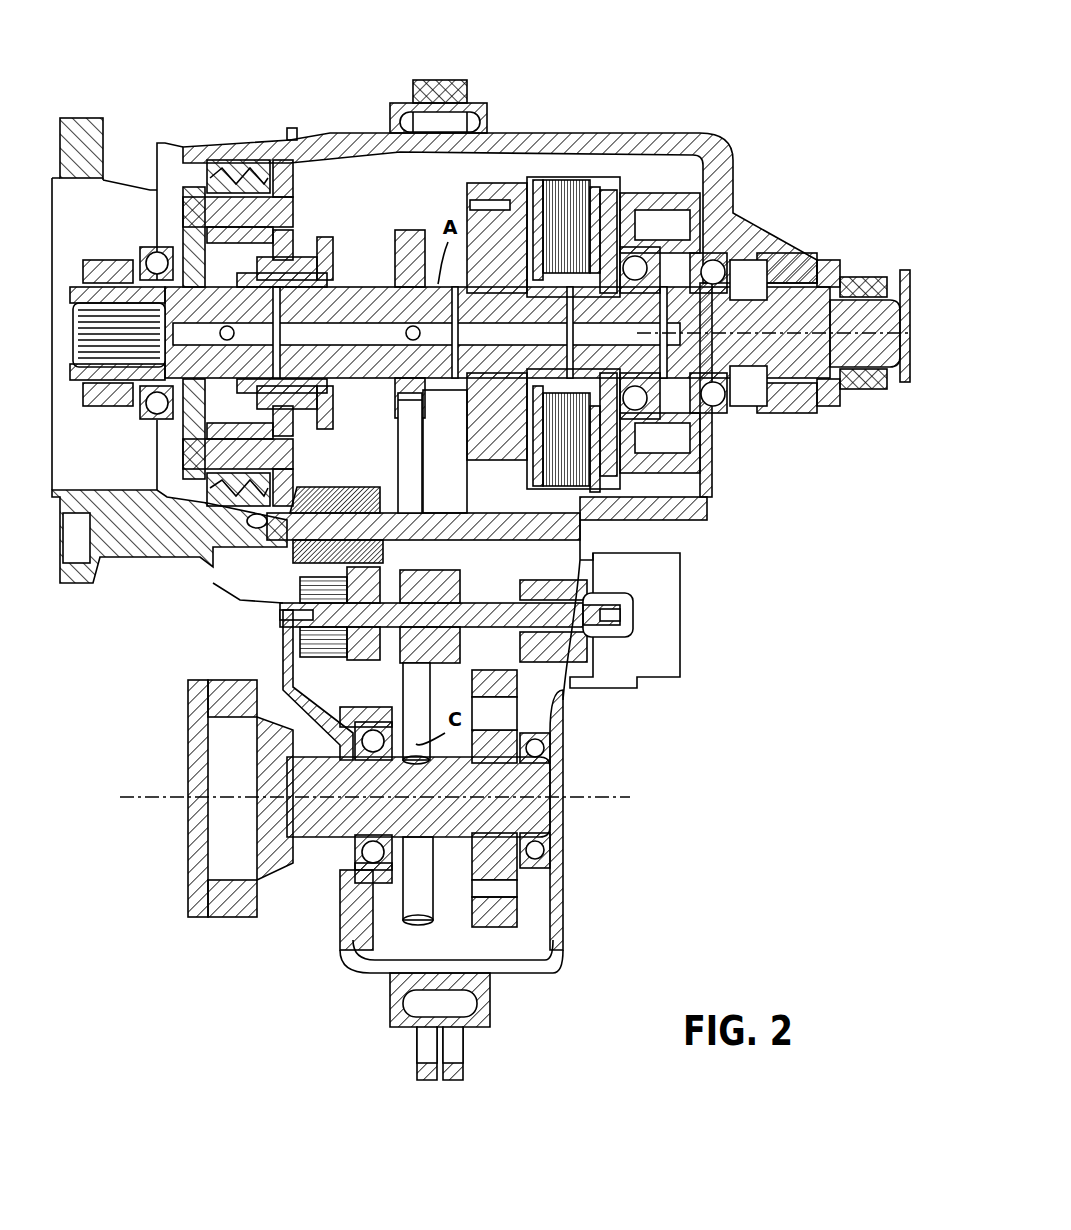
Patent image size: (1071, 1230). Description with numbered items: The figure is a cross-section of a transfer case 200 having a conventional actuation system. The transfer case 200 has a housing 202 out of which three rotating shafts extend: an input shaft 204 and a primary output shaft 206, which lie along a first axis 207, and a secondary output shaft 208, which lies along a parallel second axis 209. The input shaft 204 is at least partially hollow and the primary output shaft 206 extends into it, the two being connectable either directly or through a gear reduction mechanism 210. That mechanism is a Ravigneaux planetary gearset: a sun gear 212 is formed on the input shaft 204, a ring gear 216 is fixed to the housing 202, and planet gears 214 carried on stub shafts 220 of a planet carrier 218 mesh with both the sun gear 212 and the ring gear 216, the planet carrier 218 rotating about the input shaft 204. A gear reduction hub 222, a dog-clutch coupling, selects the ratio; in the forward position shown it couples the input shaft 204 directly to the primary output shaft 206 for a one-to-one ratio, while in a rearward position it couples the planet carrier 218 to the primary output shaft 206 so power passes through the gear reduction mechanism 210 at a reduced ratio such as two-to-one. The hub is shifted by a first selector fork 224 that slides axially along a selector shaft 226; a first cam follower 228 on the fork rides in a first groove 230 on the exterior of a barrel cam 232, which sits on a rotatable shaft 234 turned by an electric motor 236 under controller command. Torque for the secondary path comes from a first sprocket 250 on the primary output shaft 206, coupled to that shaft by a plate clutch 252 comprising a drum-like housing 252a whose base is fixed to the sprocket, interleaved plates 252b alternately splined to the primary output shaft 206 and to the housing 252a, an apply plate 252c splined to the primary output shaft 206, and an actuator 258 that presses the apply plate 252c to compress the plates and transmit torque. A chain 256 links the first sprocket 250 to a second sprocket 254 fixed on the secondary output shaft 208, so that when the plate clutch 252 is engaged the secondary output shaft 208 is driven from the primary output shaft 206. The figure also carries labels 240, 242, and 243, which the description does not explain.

The transfer case 200 is at (814, 64).
The housing 202 is at (716, 133).
The input shaft 204 is at (102, 260).
The primary output shaft 206 is at (862, 278).
The first axis 207 is at (752, 300).
The secondary output shaft 208 is at (236, 682).
The second axis 209 is at (160, 797).
The gear reduction mechanism 210 is at (294, 192).
The sun gear 212 is at (292, 238).
The planet gears 214 is at (230, 160).
The ring gear 216 is at (237, 196).
The planet carrier 218 is at (294, 194).
The stub shafts 220 is at (160, 248).
The gear reduction hub 222 is at (336, 246).
The first selector fork 224 is at (340, 484).
The selector shaft 226 is at (262, 524).
The first cam follower 228 is at (332, 592).
The first groove 230 is at (281, 615).
The barrel cam 232 is at (450, 572).
The rotatable shaft 234 is at (596, 624).
The electric motor 236 is at (683, 603).
The key 240 is at (409, 229).
The shaft 242 is at (422, 447).
The pin 243 is at (434, 954).
The first sprocket 250 is at (468, 213).
The plate clutch 252 is at (583, 8).
The housing 252a is at (540, 180).
The interleaved plates 252b is at (565, 180).
The apply plate 252c is at (595, 187).
The second sprocket 254 is at (500, 910).
The chain 256 is at (510, 940).
The actuator 258 is at (650, 194).